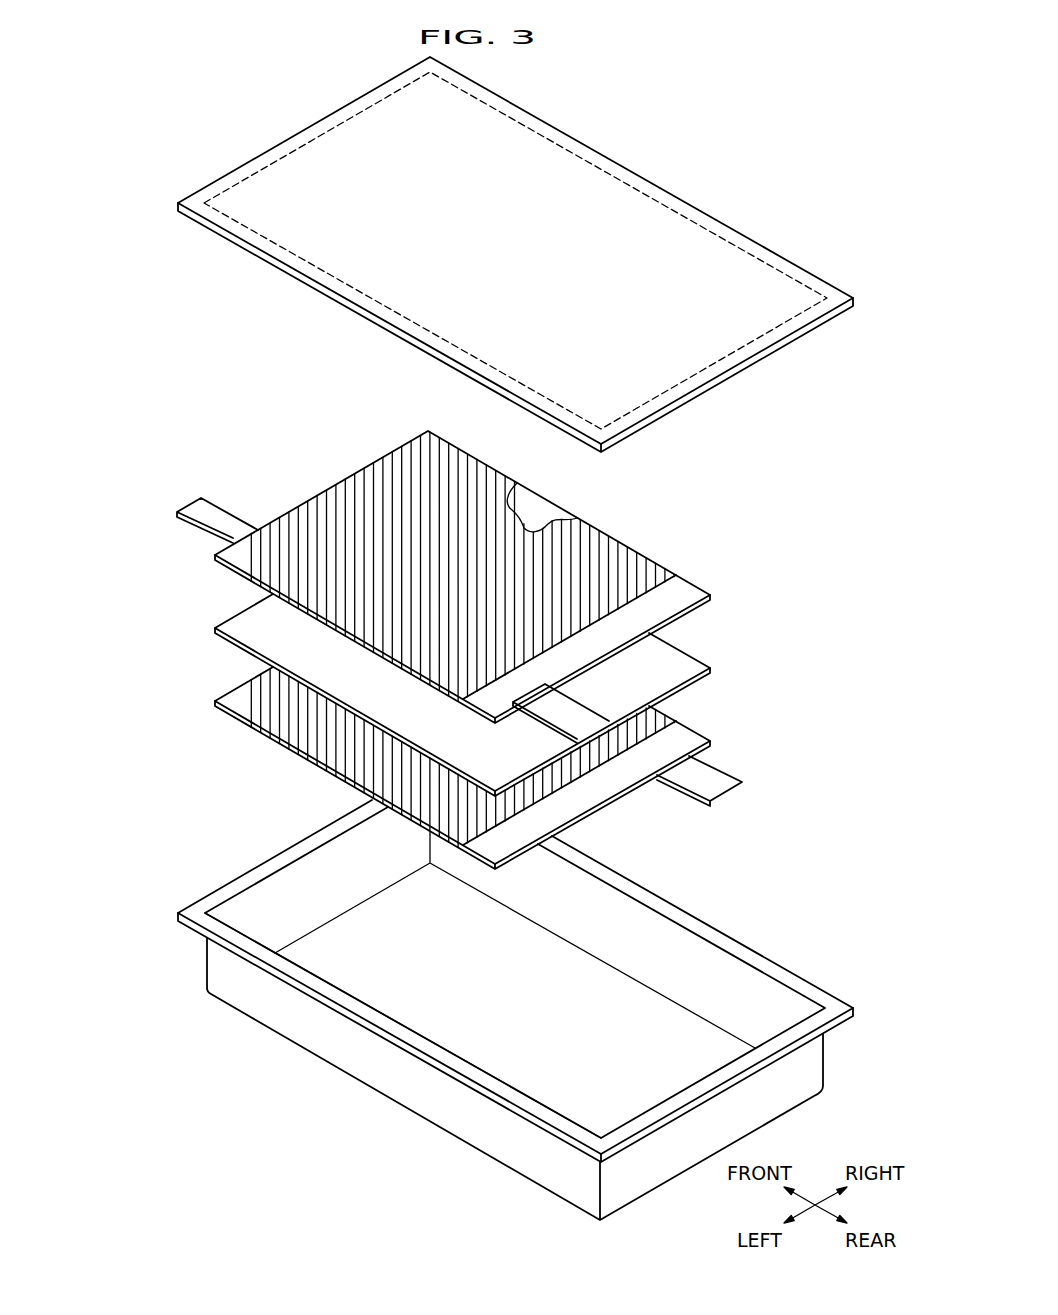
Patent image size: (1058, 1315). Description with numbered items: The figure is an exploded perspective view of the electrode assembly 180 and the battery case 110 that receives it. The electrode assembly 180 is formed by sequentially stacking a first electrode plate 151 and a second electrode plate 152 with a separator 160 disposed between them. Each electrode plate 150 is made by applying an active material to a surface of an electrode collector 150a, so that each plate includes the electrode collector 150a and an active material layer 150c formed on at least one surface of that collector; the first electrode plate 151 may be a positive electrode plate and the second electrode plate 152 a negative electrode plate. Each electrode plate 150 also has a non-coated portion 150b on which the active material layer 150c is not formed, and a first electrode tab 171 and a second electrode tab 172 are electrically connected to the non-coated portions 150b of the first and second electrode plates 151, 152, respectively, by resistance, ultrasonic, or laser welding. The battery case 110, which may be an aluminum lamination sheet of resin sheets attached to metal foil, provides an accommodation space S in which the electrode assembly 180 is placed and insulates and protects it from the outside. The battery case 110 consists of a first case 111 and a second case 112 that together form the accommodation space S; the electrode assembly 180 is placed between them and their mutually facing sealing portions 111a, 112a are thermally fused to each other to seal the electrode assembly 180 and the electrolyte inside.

The battery case 110 is at (465, 1010).
The first case 111 is at (515, 254).
The sealing portion 111a is at (668, 208).
The second case 112 is at (777, 964).
The sealing portion 112a is at (545, 1112).
The accommodation space S is at (450, 1007).
The electrode assembly 180 is at (484, 637).
The electrode plate 150 is at (484, 637).
The second electrode plate 152 is at (443, 564).
The first electrode plate 151 is at (503, 768).
The electrode collector 150a is at (547, 513).
The non-coated portion 150b is at (436, 444).
The active material layer 150c is at (492, 488).
The separator 160 is at (496, 695).
The first electrode tab 171 is at (717, 786).
The second electrode tab 172 is at (583, 722).